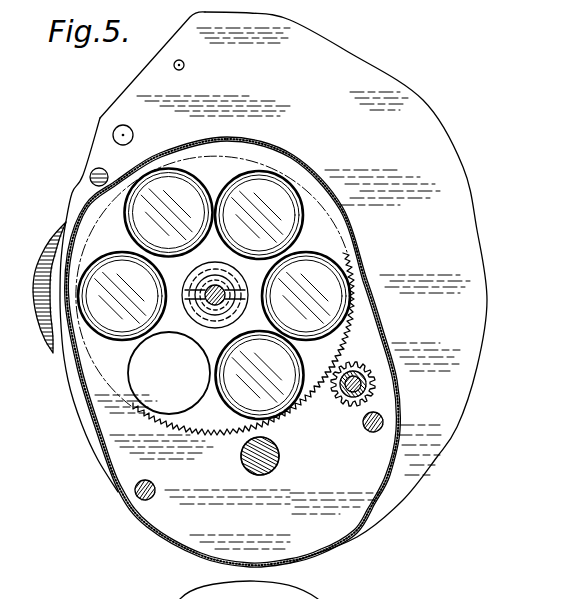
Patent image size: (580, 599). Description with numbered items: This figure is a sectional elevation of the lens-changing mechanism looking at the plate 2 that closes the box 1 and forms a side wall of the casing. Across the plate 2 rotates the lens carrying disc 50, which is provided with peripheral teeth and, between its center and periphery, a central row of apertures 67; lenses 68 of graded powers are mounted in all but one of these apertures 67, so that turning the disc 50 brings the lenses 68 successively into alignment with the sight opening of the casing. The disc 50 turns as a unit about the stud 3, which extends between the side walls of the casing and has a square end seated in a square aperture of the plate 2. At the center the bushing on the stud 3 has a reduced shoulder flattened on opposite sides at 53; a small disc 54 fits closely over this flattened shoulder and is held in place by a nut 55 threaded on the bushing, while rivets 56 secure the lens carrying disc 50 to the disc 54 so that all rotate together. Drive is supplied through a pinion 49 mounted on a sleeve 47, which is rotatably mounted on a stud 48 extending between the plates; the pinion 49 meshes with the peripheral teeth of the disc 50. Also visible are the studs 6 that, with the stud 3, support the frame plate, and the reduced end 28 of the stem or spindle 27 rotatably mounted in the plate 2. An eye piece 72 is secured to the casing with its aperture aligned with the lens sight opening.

The box 1 is at (115, 491).
The plate 2 is at (478, 250).
The stud 3 is at (211, 300).
The studs 6 is at (157, 491).
The stem or spindle 27 is at (274, 469).
The end of reduced diameter 28 is at (248, 470).
The sleeve 47 is at (368, 378).
The stud 48 is at (358, 390).
The pinion 49 is at (370, 363).
The lens carrying disc 50 is at (348, 330).
The flattened sides 53 is at (225, 267).
The small disc 54 is at (243, 284).
The nut 55 is at (230, 275).
The rivets 56 is at (190, 269).
The apertures 67 is at (130, 372).
The lenses 68 is at (187, 176).
The eye piece 72 is at (48, 356).